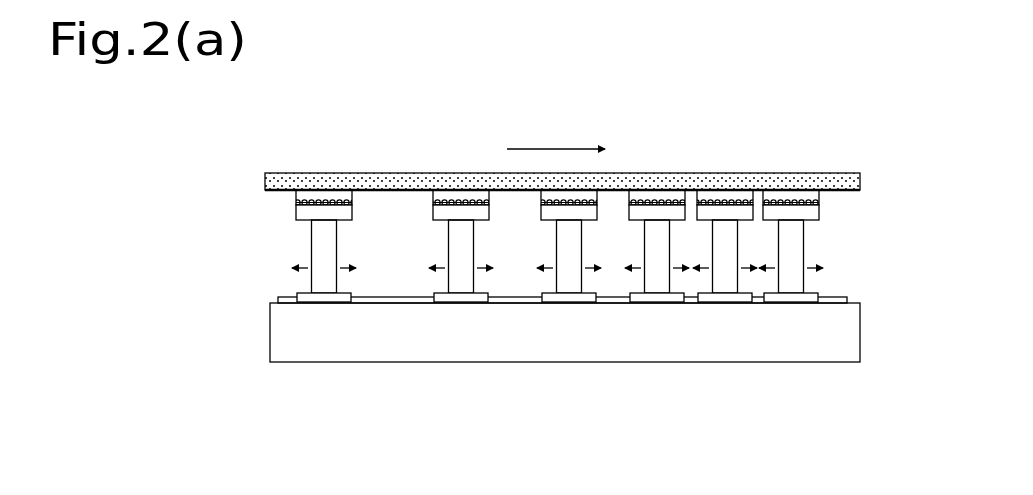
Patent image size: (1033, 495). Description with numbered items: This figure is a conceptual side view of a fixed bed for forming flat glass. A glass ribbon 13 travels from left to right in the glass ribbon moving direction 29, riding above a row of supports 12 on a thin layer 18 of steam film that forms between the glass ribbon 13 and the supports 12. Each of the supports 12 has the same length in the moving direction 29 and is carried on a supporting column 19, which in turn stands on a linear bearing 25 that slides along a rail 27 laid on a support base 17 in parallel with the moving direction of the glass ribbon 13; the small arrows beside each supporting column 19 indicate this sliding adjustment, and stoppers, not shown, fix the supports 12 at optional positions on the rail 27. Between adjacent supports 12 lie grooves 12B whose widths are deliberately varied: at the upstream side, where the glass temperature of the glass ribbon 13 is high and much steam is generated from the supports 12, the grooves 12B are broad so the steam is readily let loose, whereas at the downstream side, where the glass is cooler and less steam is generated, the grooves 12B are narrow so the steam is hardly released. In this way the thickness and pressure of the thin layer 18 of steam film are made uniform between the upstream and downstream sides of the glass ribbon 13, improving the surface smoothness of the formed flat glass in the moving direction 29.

The support 12 is at (293, 222).
The groove 12B is at (390, 207).
The glass ribbon 13 is at (780, 172).
The support base 17 is at (568, 330).
The thin layer of steam film 18 is at (295, 200).
The supporting column 19 is at (457, 240).
The linear bearing 25 is at (453, 305).
The rail 27 is at (833, 296).
The glass ribbon moving direction 29 is at (548, 147).